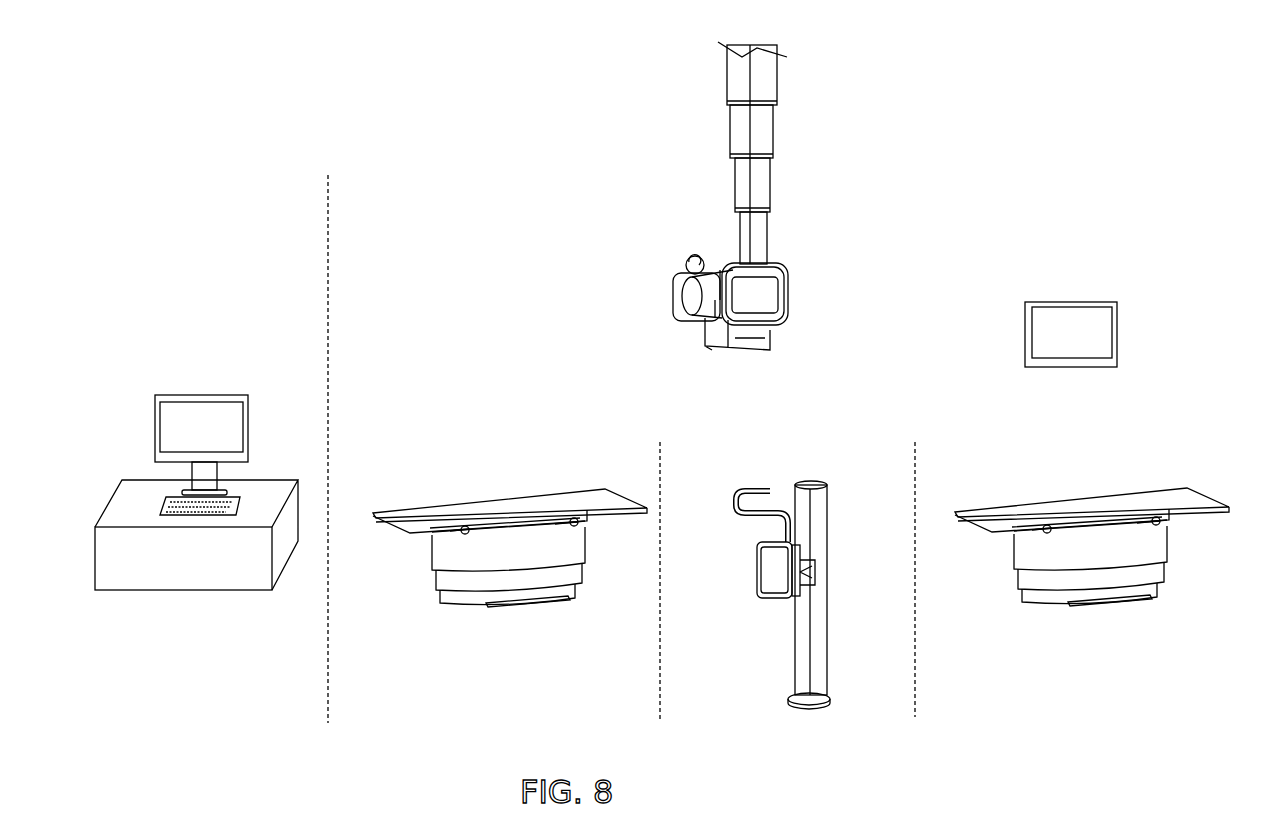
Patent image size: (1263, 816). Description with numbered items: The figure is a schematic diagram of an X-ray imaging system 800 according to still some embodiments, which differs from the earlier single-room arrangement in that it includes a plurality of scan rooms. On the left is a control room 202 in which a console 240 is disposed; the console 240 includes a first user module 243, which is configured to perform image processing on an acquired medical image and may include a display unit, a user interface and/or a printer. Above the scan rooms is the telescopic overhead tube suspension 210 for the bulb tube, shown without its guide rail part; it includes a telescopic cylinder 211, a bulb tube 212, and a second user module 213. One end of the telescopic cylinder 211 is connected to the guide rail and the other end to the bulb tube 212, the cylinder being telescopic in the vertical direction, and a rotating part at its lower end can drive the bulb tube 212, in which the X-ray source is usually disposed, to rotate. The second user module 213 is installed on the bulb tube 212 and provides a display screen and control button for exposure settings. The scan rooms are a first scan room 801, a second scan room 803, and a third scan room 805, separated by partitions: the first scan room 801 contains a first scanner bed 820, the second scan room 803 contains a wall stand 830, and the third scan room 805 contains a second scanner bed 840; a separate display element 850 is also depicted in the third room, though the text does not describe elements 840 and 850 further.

The X-ray imaging system 800 is at (232, 160).
The control room 202 is at (232, 737).
The console 240 is at (180, 363).
The first user module 243 is at (222, 432).
The telescopic overhead tube suspension for bulb tube 210 is at (695, 155).
The telescopic cylinder 211 is at (760, 197).
The bulb tube 212 is at (698, 276).
The second user module 213 is at (767, 302).
The first scan room 801 is at (522, 746).
The first scanner bed 820 is at (460, 492).
The second scan room 803 is at (828, 747).
The wall stand 830 is at (805, 462).
The third scan room 805 is at (1102, 747).
The second patient table 840 is at (1045, 492).
The wall display 850 is at (1085, 333).